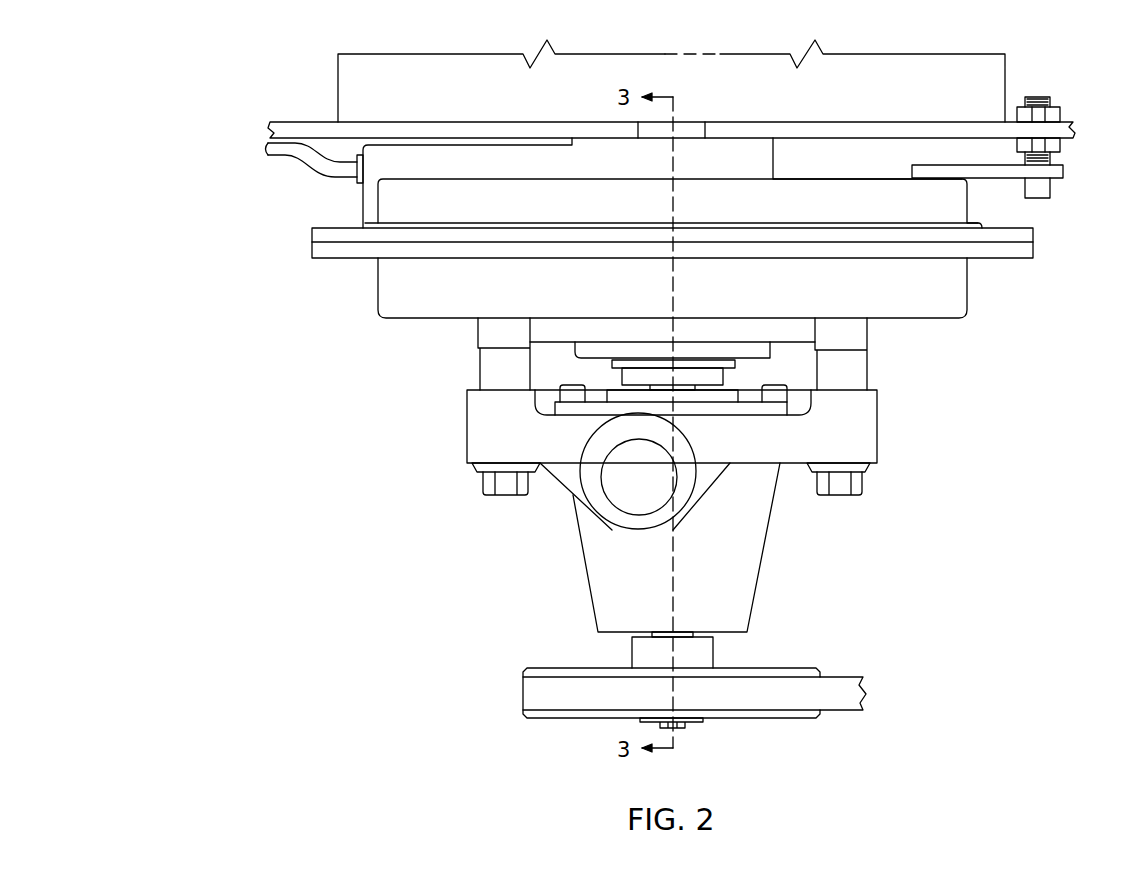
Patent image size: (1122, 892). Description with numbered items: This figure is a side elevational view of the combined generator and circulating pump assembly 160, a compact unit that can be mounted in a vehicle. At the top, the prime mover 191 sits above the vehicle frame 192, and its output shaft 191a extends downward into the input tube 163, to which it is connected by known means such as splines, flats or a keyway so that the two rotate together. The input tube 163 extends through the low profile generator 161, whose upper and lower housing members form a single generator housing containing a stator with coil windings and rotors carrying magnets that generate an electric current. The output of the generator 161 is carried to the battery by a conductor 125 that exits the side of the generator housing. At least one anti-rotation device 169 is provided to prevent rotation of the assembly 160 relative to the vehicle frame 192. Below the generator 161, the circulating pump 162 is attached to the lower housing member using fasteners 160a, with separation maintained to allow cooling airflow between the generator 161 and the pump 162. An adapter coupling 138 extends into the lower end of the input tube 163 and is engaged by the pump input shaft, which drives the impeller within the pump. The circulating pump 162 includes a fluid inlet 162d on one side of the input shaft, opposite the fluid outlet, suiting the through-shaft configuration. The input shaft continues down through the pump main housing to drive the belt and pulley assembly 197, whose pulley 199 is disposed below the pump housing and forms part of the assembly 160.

The combined generator and circulating pump assembly 160 is at (222, 207).
The low profile generator 161 is at (406, 349).
The circulating pump 162 is at (523, 562).
The fluid inlet 162d is at (615, 503).
The fasteners 160a is at (505, 497).
The input tube 163 is at (612, 365).
The adapter coupling 138 is at (723, 376).
The conductor 125 is at (333, 180).
The anti-rotation device 169 is at (1070, 192).
The prime mover 191 is at (338, 72).
The output shaft 191a is at (706, 128).
The vehicle frame 192 is at (286, 121).
The belt and pulley assembly 197 is at (501, 681).
The pulley 199 is at (543, 719).